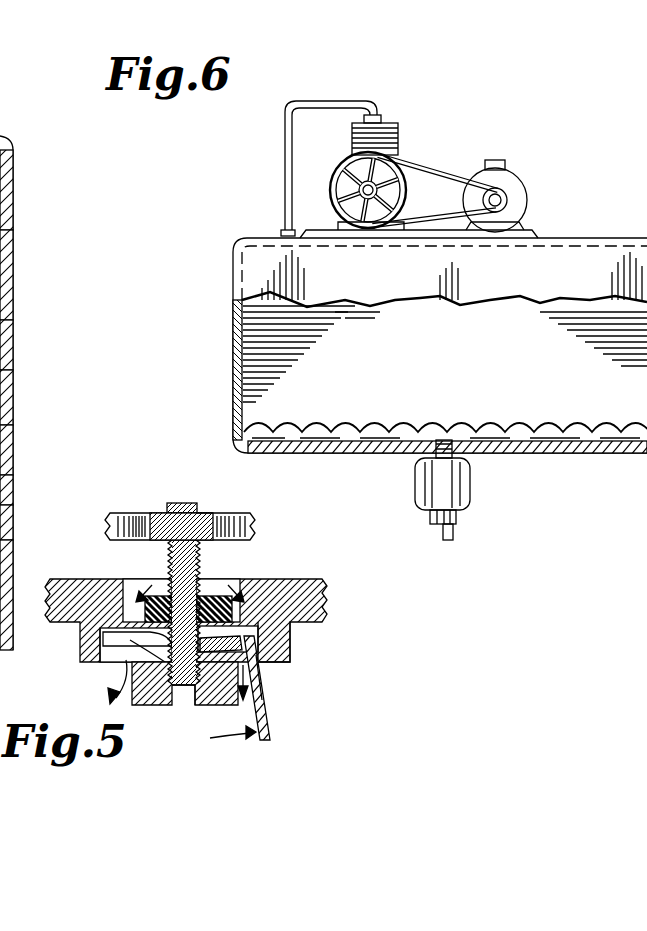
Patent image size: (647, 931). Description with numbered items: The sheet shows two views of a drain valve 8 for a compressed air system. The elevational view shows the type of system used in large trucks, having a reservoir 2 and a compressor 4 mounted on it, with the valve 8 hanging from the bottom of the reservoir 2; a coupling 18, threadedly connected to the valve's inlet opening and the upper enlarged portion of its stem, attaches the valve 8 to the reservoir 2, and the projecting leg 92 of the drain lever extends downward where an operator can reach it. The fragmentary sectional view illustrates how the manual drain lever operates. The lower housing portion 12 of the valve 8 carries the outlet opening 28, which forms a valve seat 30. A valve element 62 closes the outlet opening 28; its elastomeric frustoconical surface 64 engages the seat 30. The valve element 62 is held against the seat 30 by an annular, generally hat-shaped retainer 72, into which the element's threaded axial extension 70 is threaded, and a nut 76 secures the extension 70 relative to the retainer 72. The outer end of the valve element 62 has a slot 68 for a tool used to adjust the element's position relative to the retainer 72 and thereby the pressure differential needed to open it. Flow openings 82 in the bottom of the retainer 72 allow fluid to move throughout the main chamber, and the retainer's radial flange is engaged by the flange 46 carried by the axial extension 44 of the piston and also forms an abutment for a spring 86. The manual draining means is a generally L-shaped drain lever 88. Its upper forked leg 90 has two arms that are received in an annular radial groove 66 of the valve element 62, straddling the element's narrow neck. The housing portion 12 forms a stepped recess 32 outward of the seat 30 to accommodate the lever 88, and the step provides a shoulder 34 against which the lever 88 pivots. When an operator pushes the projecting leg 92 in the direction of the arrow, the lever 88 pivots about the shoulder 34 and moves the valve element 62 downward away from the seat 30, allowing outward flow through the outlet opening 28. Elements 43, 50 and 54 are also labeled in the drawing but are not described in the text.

In FIG. 6, the reservoir 2 is at (610, 238).
In FIG. 6, the compressor 4 is at (525, 185).
In FIG. 6, the valve 8 is at (482, 496).
In FIG. 6, the coupling 18 is at (455, 456).
In FIG. 6, the leg 92 is at (455, 537).
In FIG. 5, the leg 92 is at (272, 740).
In FIG. 5, the lower housing portion 12 is at (326, 600).
In FIG. 5, the outlet opening 28 is at (165, 582).
In FIG. 5, the valve seat 30 is at (218, 580).
In FIG. 5, the recess 32 is at (105, 662).
In FIG. 5, the shoulder 34 is at (292, 640).
In FIG. 5, the chamber 43 is at (14, 449).
In FIG. 5, the axial extension 44 is at (14, 344).
In FIG. 5, the flange 46 is at (14, 297).
In FIG. 5, the housing wall 50 is at (14, 210).
In FIG. 5, the port 54 is at (14, 491).
In FIG. 5, the valve element 62 is at (212, 712).
In FIG. 5, the elastomeric frustoconical surface 64 is at (262, 600).
In FIG. 5, the annular radial groove 66 is at (109, 692).
In FIG. 5, the slot 68 is at (183, 700).
In FIG. 5, the threaded axial extension 70 is at (183, 508).
In FIG. 5, the retainer 72 is at (157, 518).
In FIG. 5, the nut 76 is at (208, 512).
In FIG. 5, the flow openings 82 is at (258, 518).
In FIG. 5, the spring 86 is at (14, 395).
In FIG. 5, the drain lever 88 is at (288, 712).
In FIG. 5, the forked leg 90 is at (95, 638).